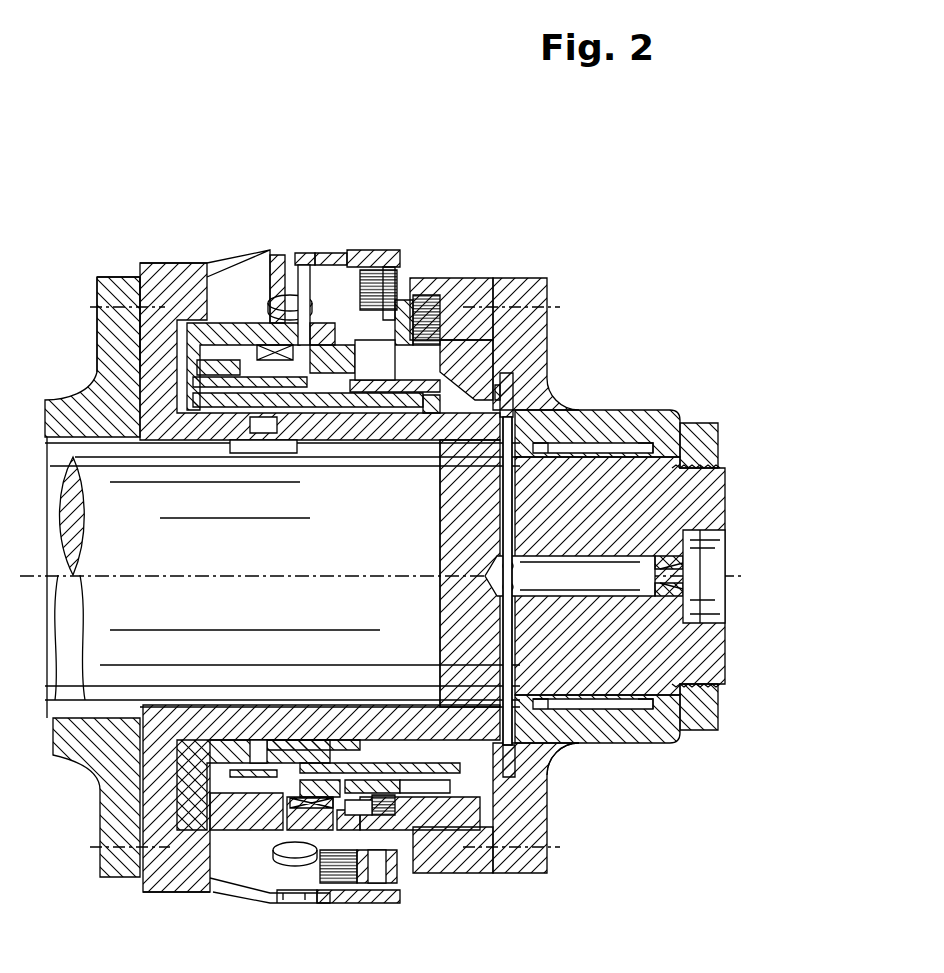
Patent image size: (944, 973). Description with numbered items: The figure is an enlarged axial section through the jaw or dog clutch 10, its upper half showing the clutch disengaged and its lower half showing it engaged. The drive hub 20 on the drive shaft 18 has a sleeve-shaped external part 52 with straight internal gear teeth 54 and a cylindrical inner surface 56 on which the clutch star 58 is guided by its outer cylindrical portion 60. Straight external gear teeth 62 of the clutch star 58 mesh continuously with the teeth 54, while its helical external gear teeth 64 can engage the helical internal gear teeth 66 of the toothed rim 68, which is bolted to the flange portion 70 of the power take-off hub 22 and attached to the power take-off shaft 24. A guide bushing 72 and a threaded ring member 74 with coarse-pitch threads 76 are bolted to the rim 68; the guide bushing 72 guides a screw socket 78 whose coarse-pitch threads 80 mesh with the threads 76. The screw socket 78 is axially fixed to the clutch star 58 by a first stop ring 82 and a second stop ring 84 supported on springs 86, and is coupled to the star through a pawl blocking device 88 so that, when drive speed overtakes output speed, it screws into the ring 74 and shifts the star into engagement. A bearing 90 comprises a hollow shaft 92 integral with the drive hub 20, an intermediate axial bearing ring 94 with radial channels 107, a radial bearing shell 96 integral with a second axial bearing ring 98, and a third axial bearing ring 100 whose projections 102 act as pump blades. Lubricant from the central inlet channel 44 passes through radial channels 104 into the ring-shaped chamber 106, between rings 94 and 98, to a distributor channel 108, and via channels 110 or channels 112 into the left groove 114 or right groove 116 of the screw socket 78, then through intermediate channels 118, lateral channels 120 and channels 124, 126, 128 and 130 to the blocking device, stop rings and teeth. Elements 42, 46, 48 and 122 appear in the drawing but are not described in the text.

The jaw or dog clutch 10 is at (446, 230).
The drive shaft 18 is at (70, 418).
The drive hub 20 is at (158, 240).
The power take-off hub 22 is at (512, 268).
The power take-off shaft 24 is at (673, 503).
The plug 42 is at (708, 620).
The central inlet channel 44 is at (603, 566).
The cone 46 is at (664, 598).
The disc 48 is at (300, 308).
The sleeve-shaped external part 52 is at (373, 258).
The straight internal gear teeth 54 is at (398, 300).
The cylindrical inner surface 56 is at (173, 343).
The clutch star 58 is at (272, 318).
The outer cylindrical portion 60 is at (200, 350).
The straight external gear teeth 62 is at (330, 280).
The helical external gear teeth 64 is at (412, 300).
The helical internal gear teeth 66 is at (428, 305).
The toothed rim 68 is at (472, 292).
The flange portion 70 is at (533, 294).
The guide bushing 72 is at (393, 402).
The threaded ring member 74 is at (440, 350).
The coarse-pitch threads 76 is at (455, 357).
The screw socket 78 is at (360, 440).
The coarse-pitch threads 80 is at (487, 387).
The first stop ring 82 is at (233, 345).
The second stop ring 84 is at (302, 305).
The springs 86 is at (355, 290).
The pawl blocking device 88 is at (243, 300).
The bearing 90 is at (358, 426).
The hollow shaft 92 is at (175, 432).
The intermediate axial bearing ring 94 is at (548, 744).
The radial bearing shell 96 is at (420, 375).
The second axial bearing ring 98 is at (470, 398).
The third axial bearing ring 100 is at (517, 413).
The projections 102 is at (520, 412).
The radial channels 104 is at (478, 603).
The ring-shaped chamber 106 is at (513, 400).
The radial channels 107 is at (446, 487).
The distributor channel 108 is at (290, 750).
The channels 110 is at (242, 750).
The channels 112 is at (393, 782).
The left groove 114 is at (314, 775).
The right groove 116 is at (378, 772).
The intermediate channels 118 is at (318, 748).
The lateral channels 120 is at (264, 745).
The ring 122 is at (336, 775).
The channels 124 is at (372, 812).
The channels 126 is at (285, 838).
The channels 128 is at (330, 862).
The channels 130 is at (392, 815).